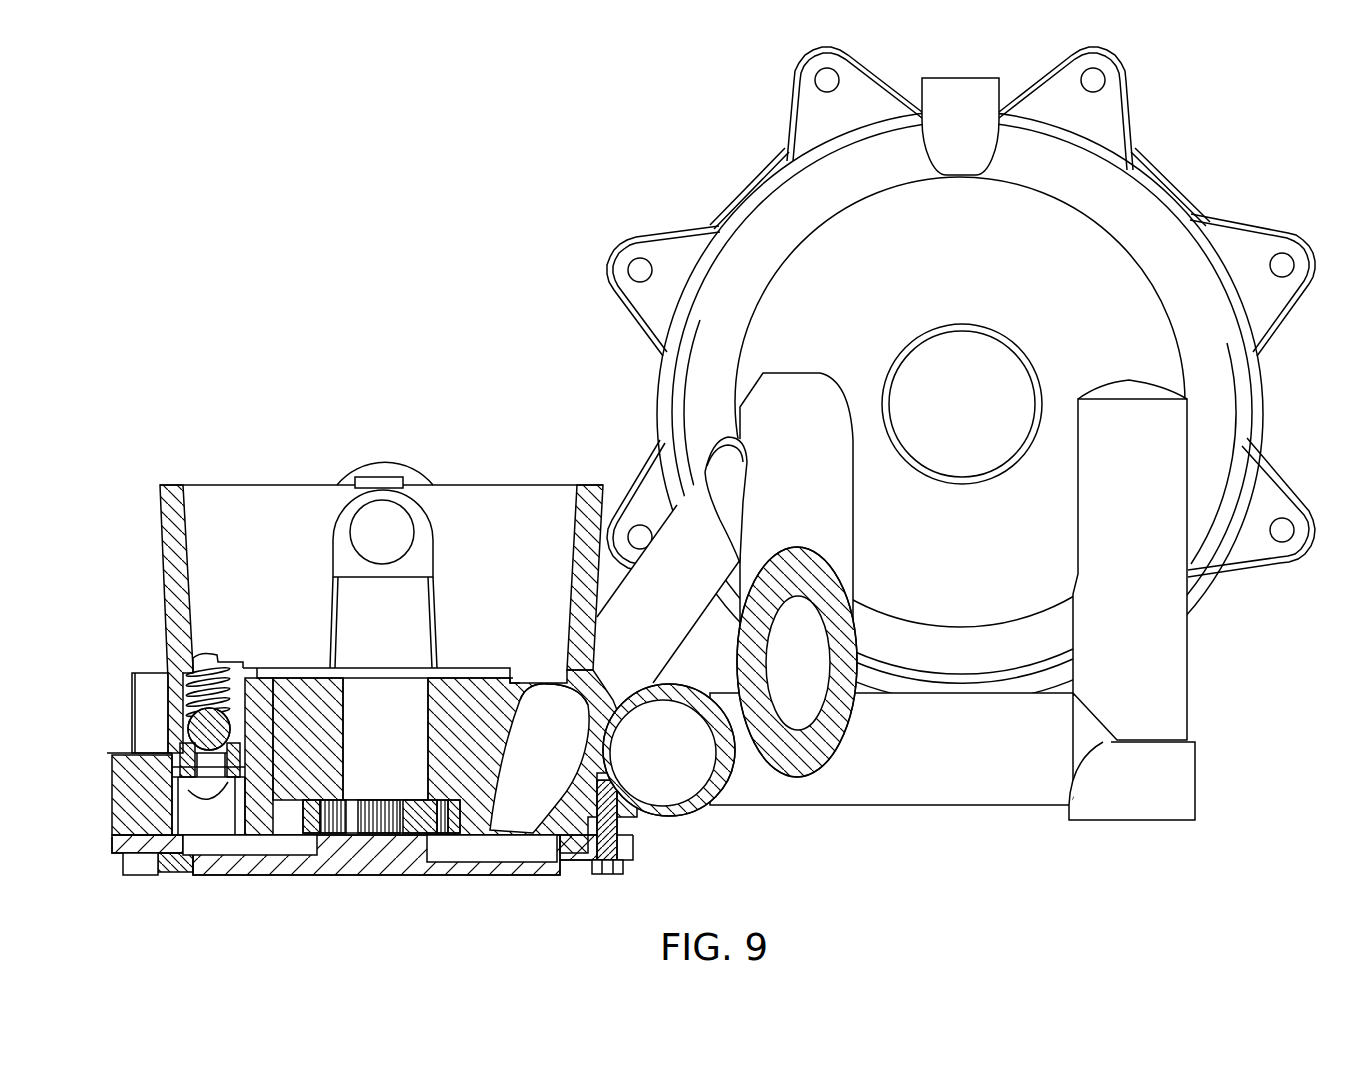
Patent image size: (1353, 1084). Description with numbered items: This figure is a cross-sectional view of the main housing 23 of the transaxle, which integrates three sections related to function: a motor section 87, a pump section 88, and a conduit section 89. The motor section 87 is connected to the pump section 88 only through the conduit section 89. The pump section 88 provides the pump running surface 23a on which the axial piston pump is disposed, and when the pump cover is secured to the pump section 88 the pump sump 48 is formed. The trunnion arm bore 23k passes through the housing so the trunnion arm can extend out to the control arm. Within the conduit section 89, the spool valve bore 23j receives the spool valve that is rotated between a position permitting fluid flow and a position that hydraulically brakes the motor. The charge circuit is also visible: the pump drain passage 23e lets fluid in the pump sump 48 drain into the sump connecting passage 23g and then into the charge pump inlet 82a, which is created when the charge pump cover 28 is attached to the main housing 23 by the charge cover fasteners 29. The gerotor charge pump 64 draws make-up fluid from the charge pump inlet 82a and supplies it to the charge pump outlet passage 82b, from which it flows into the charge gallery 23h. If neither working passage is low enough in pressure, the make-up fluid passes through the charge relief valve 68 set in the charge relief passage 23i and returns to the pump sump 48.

The motor section 87 is at (1206, 131).
The main housing 23 is at (862, 302).
The pump section 88 is at (250, 451).
The conduit section 89 is at (779, 842).
The trunnion arm bore 23k is at (393, 521).
The pump sump 48 is at (520, 597).
The charge relief passage 23i is at (205, 656).
The pump running surface 23a is at (296, 677).
The pump drain passage 23e is at (525, 697).
The sump connecting passage 23g is at (557, 793).
The charge relief valve 68 is at (210, 730).
The charge gallery 23h is at (210, 815).
The charge pump cover 28 is at (357, 880).
The charge pump outlet passage 82b is at (547, 873).
The charge pump inlet 82a is at (490, 853).
The gerotor charge pump 64 is at (423, 817).
The charge cover fasteners 29 is at (603, 878).
The spool valve bore 23j is at (705, 780).